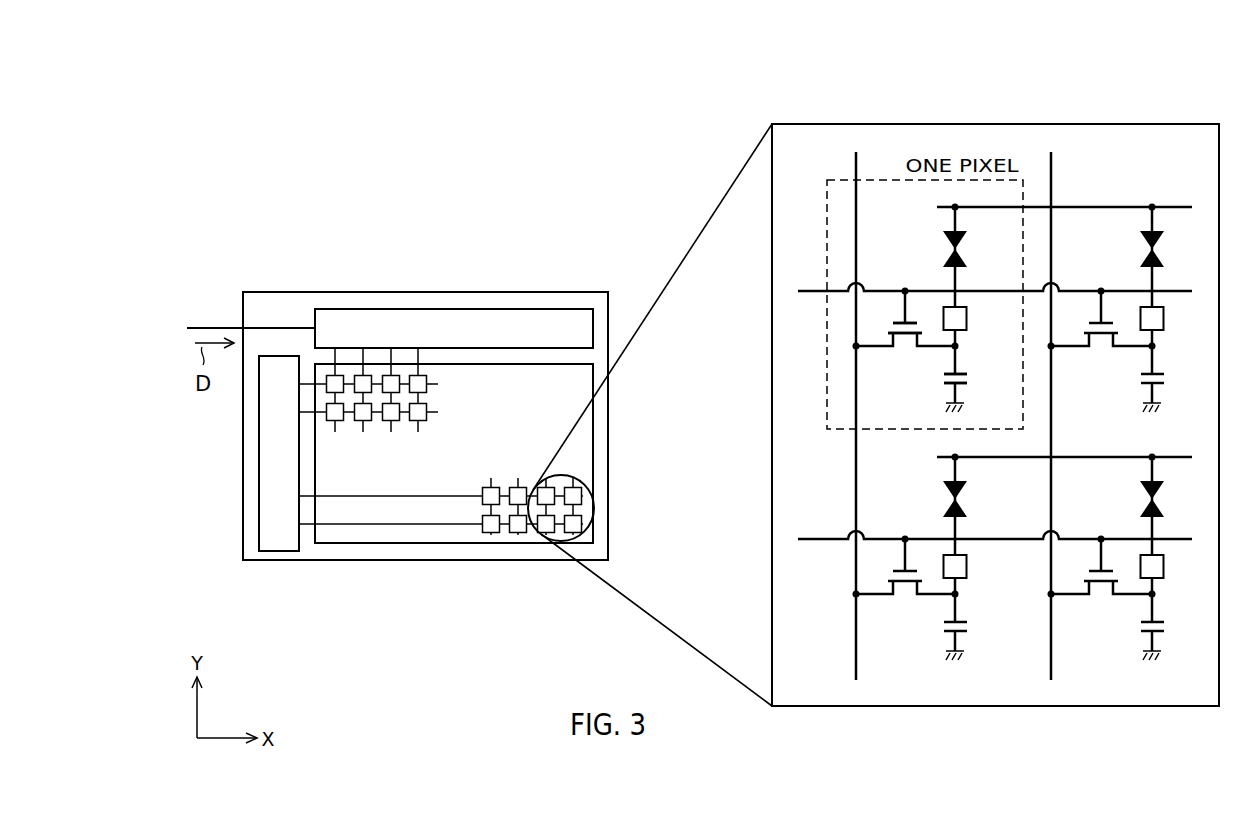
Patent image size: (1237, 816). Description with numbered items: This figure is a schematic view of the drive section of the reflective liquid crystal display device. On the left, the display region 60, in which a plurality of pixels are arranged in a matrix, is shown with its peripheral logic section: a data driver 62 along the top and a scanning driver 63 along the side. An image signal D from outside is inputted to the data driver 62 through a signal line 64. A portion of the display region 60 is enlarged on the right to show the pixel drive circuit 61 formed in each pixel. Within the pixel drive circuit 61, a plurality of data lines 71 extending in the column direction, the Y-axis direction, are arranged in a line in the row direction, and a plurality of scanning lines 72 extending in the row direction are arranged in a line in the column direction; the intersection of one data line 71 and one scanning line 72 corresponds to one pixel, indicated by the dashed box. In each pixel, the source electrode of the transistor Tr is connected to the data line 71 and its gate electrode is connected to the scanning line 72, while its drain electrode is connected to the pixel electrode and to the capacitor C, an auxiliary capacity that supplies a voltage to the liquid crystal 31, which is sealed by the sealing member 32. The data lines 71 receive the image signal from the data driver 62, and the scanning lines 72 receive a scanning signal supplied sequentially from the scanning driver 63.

The display region 60 is at (407, 543).
The data driver 62 is at (550, 309).
The scanning driver 63 is at (279, 551).
The signal line 64 is at (218, 326).
The pixel drive circuit 61 is at (1122, 124).
The data line 71 is at (853, 162).
The scanning line 72 is at (808, 292).
The sealing member 32 is at (1092, 207).
The liquid crystal 31 is at (945, 252).
The transistor Tr is at (905, 338).
The capacitor C is at (967, 382).